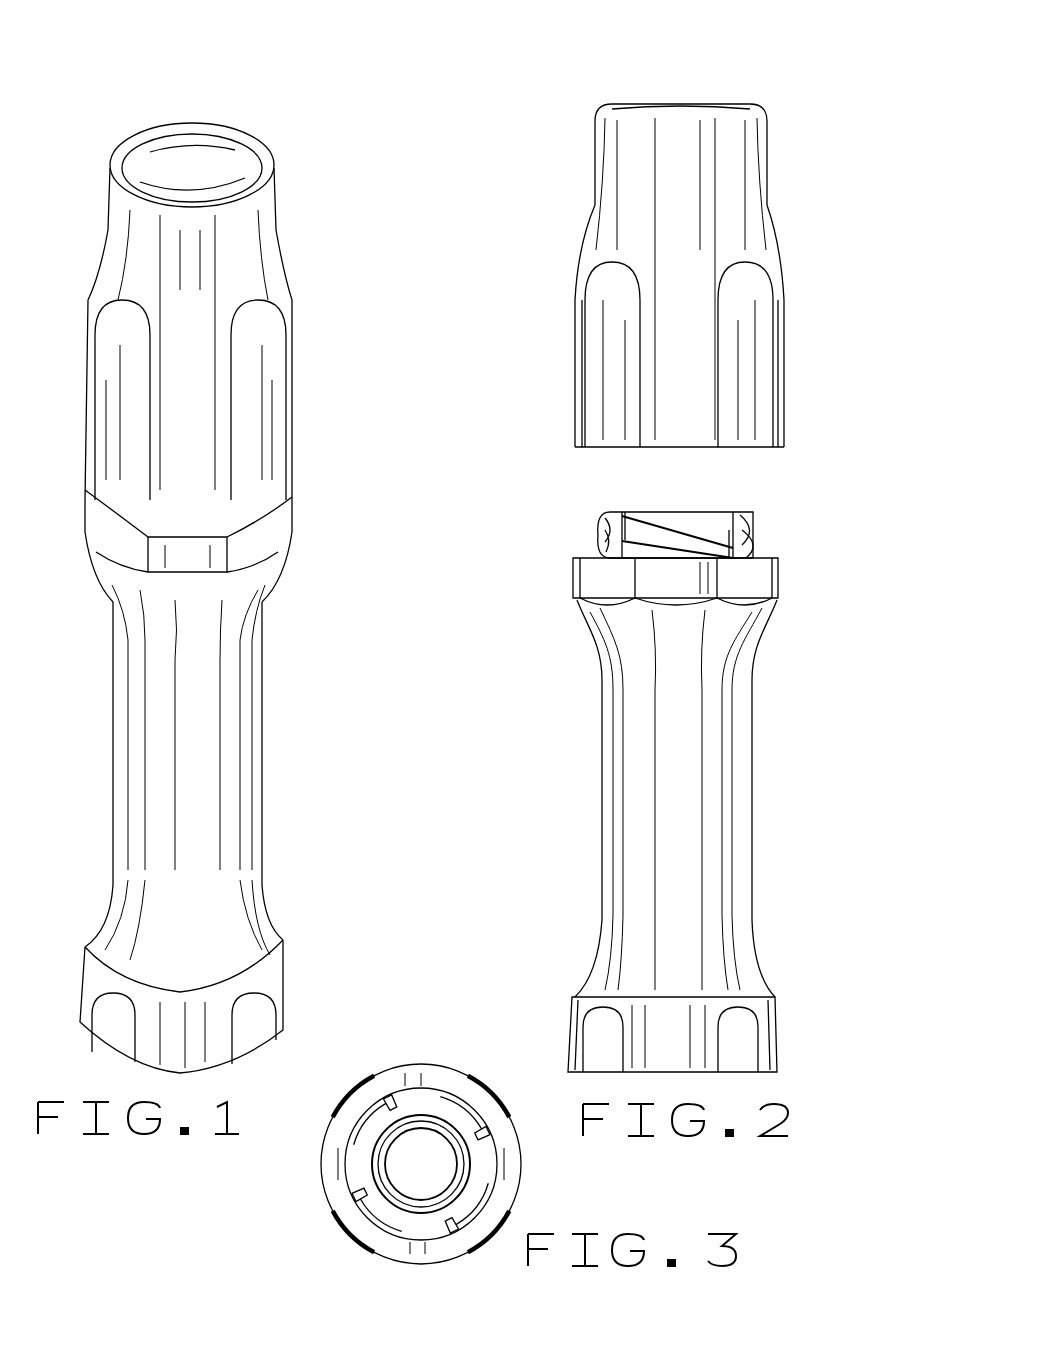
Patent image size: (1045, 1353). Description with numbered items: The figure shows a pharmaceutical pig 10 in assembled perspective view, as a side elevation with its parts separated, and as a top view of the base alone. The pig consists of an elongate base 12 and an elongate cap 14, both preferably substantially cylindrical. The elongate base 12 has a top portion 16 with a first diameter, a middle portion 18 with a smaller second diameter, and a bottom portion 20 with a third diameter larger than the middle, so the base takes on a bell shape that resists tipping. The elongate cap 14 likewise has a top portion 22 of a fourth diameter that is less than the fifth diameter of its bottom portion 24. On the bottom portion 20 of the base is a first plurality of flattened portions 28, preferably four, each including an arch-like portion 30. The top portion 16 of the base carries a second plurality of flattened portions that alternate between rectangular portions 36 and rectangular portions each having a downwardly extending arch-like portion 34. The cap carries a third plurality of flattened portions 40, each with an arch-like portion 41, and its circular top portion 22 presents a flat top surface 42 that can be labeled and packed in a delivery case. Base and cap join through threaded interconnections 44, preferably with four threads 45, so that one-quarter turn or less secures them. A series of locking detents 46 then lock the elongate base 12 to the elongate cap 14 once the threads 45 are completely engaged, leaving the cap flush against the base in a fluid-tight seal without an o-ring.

In FIG. 1, the pharmaceutical pig 10 is at (235, 595).
In FIG. 2, the pharmaceutical pig 10 is at (714, 553).
In FIG. 1, the elongate base 12 is at (256, 735).
In FIG. 2, the elongate base 12 is at (702, 760).
In FIG. 1, the elongate cap 14 is at (215, 309).
In FIG. 2, the elongate cap 14 is at (686, 241).
In FIG. 1, the top portion of the elongate base 16 is at (243, 536).
In FIG. 2, the top portion of the elongate base 16 is at (729, 577).
In FIG. 1, the middle portion of the elongate base 18 is at (263, 752).
In FIG. 2, the middle portion of the elongate base 18 is at (730, 786).
In FIG. 1, the bottom portion of the elongate base 20 is at (207, 976).
In FIG. 2, the bottom portion of the elongate base 20 is at (695, 993).
In FIG. 1, the top portion of the elongate cap 22 is at (245, 162).
In FIG. 2, the top portion of the elongate cap 22 is at (723, 120).
In FIG. 1, the bottom portion of the elongate cap 24 is at (297, 458).
In FIG. 2, the bottom portion of the elongate cap 24 is at (789, 392).
In FIG. 1, the first plurality of flattened portions 28 is at (182, 995).
In FIG. 2, the first plurality of flattened portions 28 is at (675, 1023).
In FIG. 1, the arch-like portion 30 is at (115, 993).
In FIG. 2, the arch-like portion 30 is at (592, 1010).
In FIG. 1, the downwardly extending arch-like portion 34 is at (97, 538).
In FIG. 2, the downwardly extending arch-like portion 34 is at (609, 588).
In FIG. 3, the downwardly extending arch-like portion 34 is at (414, 1063).
In FIG. 1, the rectangular portions 36 is at (179, 570).
In FIG. 2, the rectangular portions 36 is at (657, 588).
In FIG. 3, the rectangular portions 36 is at (372, 1082).
In FIG. 1, the third plurality of flattened portions 40 is at (190, 376).
In FIG. 2, the third plurality of flattened portions 40 is at (661, 333).
In FIG. 1, the arch-like portion 41 is at (120, 304).
In FIG. 2, the arch-like portion 41 is at (612, 264).
In FIG. 1, the flat top surface 42 is at (181, 160).
In FIG. 2, the flat top surface 42 is at (680, 103).
In FIG. 2, the threaded interconnections 44 is at (727, 498).
In FIG. 3, the threaded interconnections 44 is at (424, 1190).
In FIG. 2, the threads 45 is at (636, 510).
In FIG. 2, the locking detents 46 is at (621, 515).
In FIG. 3, the locking detents 46 is at (381, 1105).